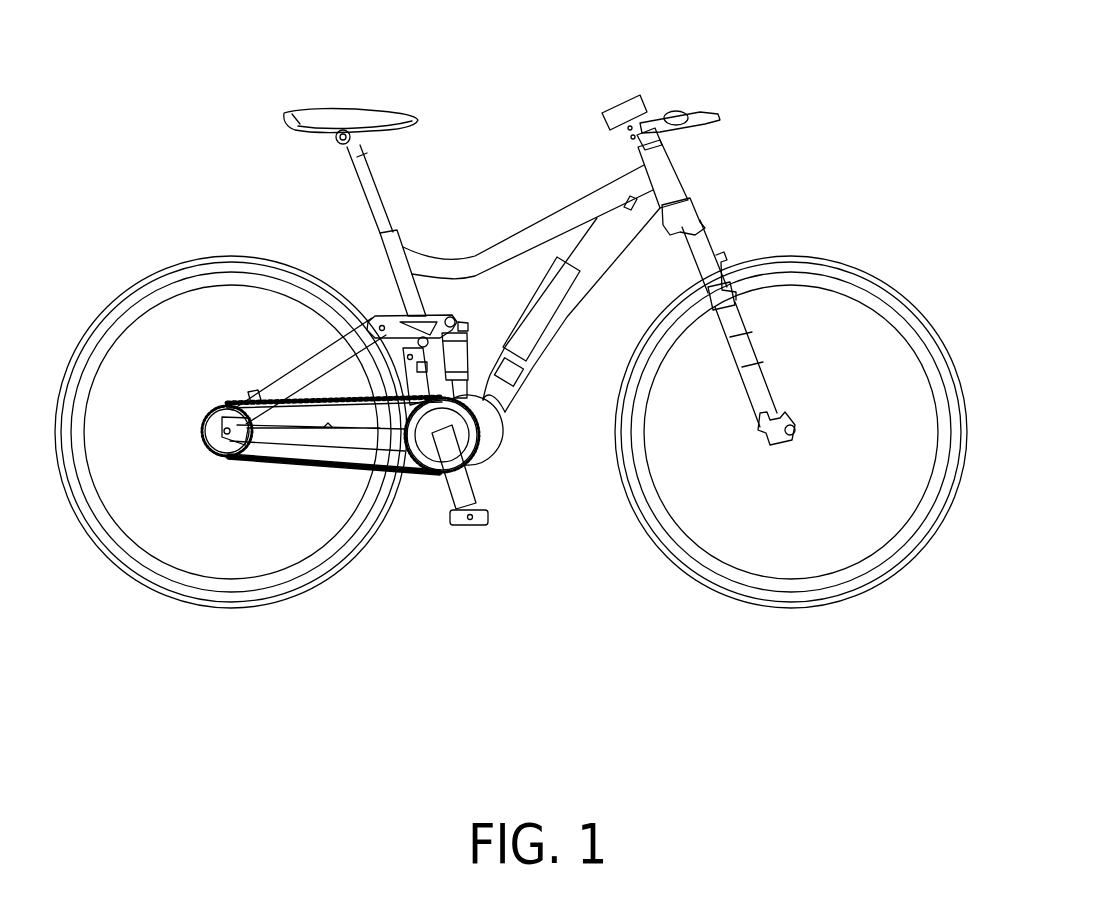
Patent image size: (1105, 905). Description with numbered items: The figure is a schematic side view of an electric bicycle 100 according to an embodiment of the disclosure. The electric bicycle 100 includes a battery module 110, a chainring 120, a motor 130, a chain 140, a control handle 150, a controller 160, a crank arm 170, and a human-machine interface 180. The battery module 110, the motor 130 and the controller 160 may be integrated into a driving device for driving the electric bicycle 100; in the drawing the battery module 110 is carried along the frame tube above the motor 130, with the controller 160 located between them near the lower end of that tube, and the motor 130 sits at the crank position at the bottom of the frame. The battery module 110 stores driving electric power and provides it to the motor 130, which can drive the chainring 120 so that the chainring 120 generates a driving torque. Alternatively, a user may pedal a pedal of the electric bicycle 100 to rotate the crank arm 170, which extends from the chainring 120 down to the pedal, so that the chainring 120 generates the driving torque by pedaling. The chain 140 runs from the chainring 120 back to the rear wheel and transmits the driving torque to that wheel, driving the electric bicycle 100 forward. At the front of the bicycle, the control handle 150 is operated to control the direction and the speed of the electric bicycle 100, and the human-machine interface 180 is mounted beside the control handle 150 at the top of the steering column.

The electric bicycle 100 is at (1087, 628).
The battery module 110 is at (567, 317).
The chainring 120 is at (432, 460).
The motor 130 is at (502, 433).
The chain 140 is at (297, 466).
The control handle 150 is at (653, 110).
The controller 160 is at (527, 378).
The crank arm 170 is at (462, 488).
The human-machine interface 180 is at (623, 112).